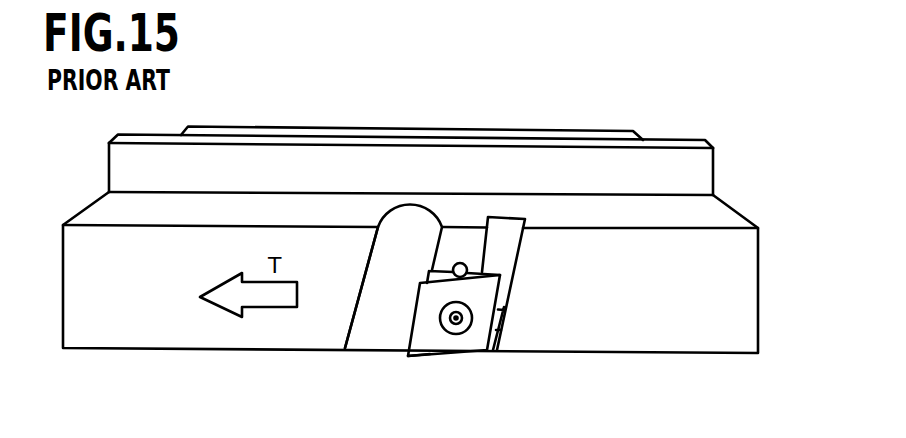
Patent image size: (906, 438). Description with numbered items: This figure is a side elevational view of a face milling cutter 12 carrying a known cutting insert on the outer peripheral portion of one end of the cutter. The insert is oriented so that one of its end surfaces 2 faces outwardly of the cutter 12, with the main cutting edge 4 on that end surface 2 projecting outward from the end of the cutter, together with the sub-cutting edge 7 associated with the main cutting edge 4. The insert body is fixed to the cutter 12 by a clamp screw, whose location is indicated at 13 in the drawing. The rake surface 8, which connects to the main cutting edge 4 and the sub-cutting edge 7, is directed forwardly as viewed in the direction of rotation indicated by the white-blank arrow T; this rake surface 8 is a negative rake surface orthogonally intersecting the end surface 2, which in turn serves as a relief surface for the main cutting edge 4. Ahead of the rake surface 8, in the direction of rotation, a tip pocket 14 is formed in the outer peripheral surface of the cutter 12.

The face milling cutter 12 is at (720, 213).
The tip pocket 14 is at (419, 223).
The end surface 2 is at (444, 343).
The main cutting edge 4 is at (418, 307).
The pivot 13 is at (458, 321).
The rake surface 8 is at (404, 341).
The sub-cutting edge 7 is at (410, 357).